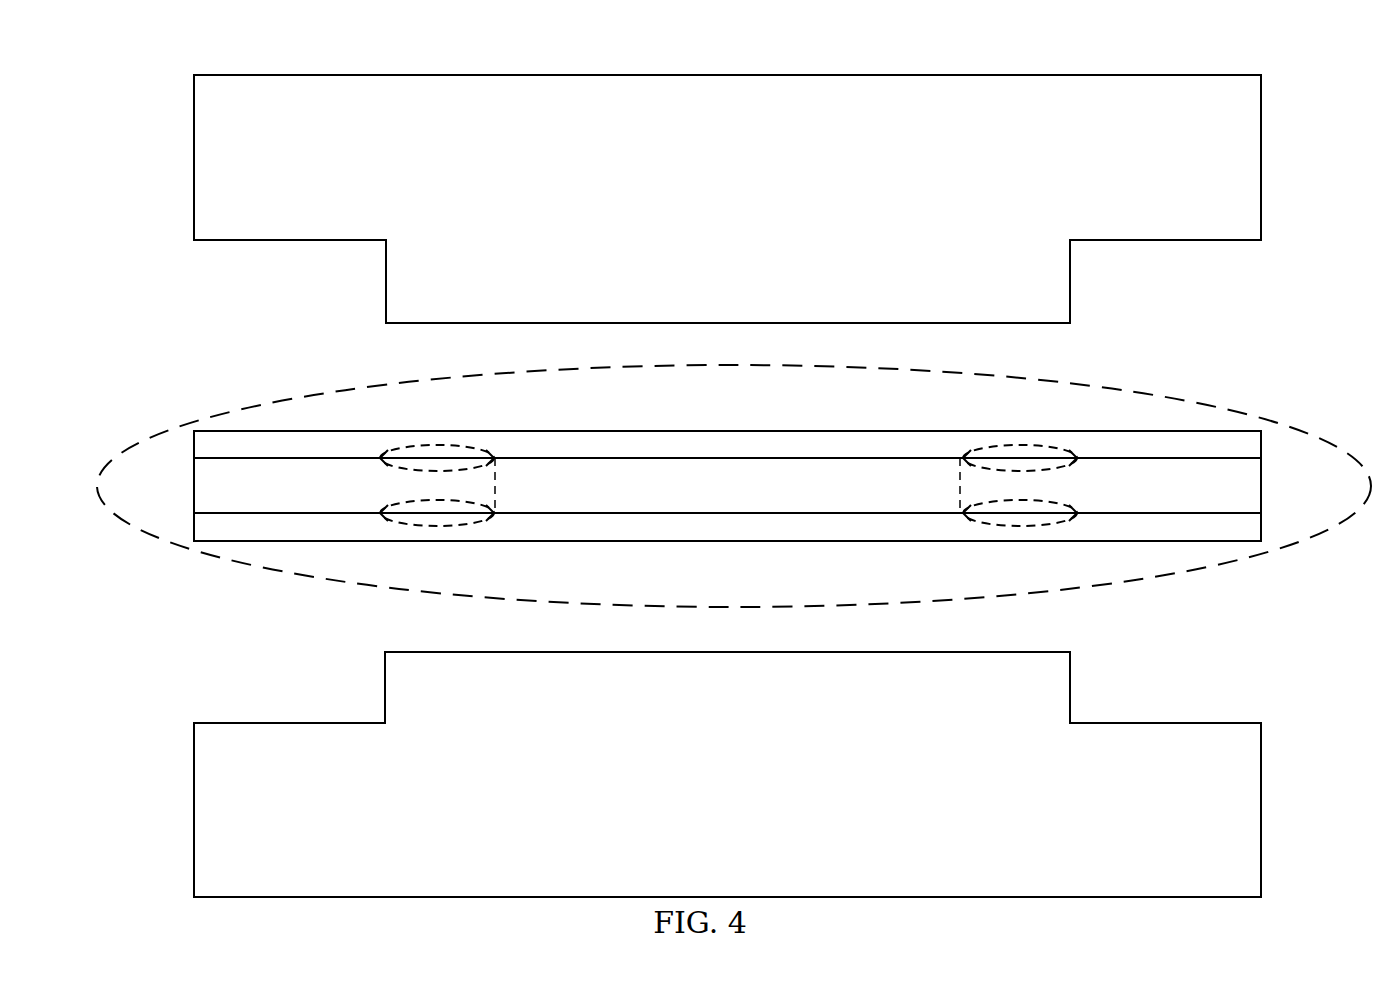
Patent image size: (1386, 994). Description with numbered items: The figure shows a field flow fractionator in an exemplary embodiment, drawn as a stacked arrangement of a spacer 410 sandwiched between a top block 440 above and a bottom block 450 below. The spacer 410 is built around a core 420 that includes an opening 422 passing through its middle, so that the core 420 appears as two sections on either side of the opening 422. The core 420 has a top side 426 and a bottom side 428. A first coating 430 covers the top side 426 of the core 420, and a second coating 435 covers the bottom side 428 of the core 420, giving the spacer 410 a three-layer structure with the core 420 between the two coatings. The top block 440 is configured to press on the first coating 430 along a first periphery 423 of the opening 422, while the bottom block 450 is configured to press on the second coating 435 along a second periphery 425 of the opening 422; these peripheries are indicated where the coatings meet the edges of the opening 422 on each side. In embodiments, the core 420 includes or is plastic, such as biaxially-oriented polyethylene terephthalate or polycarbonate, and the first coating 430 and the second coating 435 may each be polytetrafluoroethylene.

The spacer 410 is at (217, 413).
The core 420 is at (217, 490).
The opening 422 is at (577, 470).
The first periphery 423 is at (434, 447).
The second periphery 425 is at (437, 527).
The top side 426 is at (357, 458).
The bottom side 428 is at (330, 514).
The first coating 430 is at (858, 444).
The second coating 435 is at (857, 527).
The top block 440 is at (272, 75).
The bottom block 450 is at (194, 822).